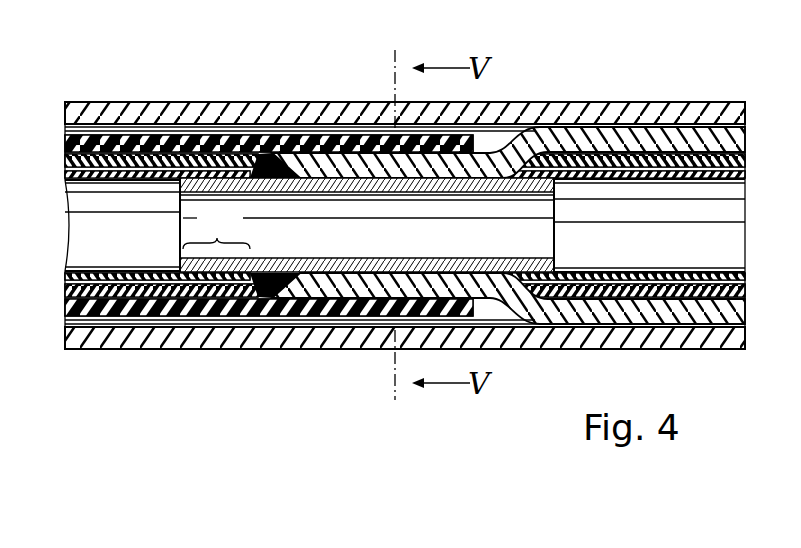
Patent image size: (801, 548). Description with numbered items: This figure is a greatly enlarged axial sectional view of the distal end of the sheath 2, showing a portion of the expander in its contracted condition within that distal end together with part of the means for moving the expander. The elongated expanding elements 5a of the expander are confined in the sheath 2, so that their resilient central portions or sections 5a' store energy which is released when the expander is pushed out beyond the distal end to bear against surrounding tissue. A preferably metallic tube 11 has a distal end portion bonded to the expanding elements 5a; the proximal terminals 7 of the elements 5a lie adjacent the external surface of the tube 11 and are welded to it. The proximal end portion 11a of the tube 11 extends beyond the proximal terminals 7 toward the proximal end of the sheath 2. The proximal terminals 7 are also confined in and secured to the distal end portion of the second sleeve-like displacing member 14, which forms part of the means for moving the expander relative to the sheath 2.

The sheath 2 is at (116, 106).
The expanding elements 5a is at (404, 94).
The elongated central portions or sections 5a' is at (425, 350).
The proximal terminals 7 is at (522, 146).
The tube 11 is at (344, 266).
The proximal end portion of the tube 11a is at (368, 231).
The second sleeve-like displacing member 14 is at (158, 305).